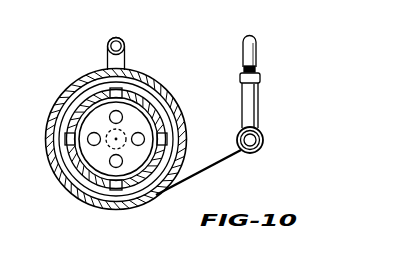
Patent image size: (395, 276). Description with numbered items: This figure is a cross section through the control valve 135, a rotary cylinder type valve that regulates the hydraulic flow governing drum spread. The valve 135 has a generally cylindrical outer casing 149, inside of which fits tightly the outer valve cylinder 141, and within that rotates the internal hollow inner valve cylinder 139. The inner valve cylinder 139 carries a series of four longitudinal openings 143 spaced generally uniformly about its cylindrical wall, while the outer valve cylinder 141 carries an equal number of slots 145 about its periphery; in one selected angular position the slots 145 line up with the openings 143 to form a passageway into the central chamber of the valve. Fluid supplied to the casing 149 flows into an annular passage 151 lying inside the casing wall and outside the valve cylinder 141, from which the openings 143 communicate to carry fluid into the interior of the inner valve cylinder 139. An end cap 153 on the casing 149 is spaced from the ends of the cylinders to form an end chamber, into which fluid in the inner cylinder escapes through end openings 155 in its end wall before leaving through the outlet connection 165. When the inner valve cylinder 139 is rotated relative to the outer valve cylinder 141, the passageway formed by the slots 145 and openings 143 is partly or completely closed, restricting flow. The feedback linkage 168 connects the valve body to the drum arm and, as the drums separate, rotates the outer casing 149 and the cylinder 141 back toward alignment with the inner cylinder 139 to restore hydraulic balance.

The valve 135 is at (148, 72).
The outer casing 149 is at (85, 79).
The inner valve cylinder 139 is at (78, 178).
The outer valve cylinder 141 is at (78, 120).
The slots 145 is at (119, 192).
The end openings 155 is at (117, 117).
The end cap 153 is at (105, 201).
The annular passage 151 is at (143, 196).
The longitudinal openings 143 is at (152, 188).
The outlet connection 165 is at (119, 26).
The feedback linkage 168 is at (257, 67).